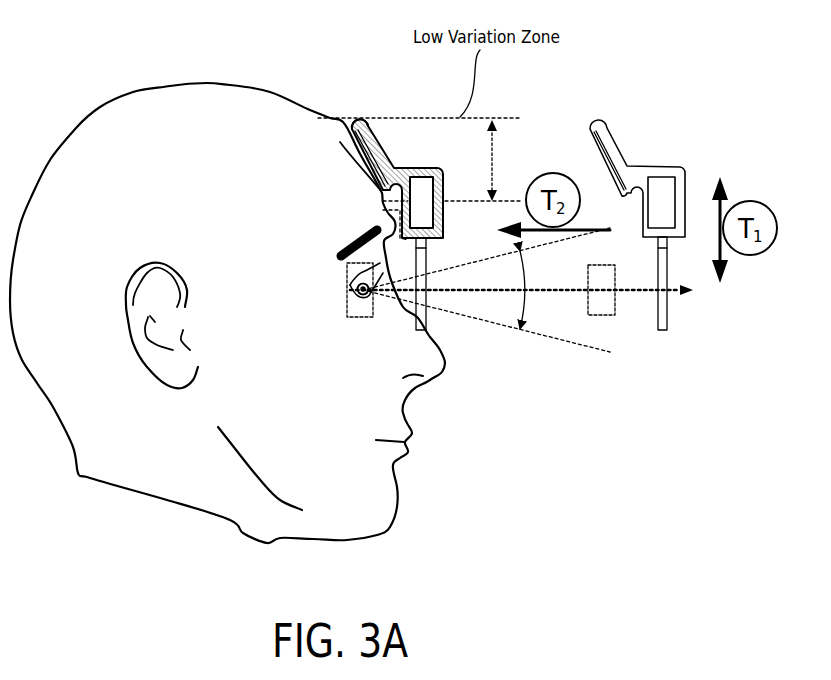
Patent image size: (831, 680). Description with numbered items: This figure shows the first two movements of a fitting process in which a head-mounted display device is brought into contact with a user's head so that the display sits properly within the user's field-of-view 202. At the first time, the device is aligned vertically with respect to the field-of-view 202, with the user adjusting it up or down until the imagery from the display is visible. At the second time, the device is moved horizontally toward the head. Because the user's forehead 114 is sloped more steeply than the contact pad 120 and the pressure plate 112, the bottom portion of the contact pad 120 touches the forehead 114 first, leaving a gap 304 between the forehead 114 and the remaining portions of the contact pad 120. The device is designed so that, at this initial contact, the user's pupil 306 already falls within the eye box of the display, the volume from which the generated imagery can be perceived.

The pressure plate 112 is at (368, 127).
The forehead 114 is at (340, 142).
The contact pad 120 is at (345, 124).
The field-of-view 202 is at (530, 273).
The gap 304 is at (322, 108).
The pupil 306 is at (352, 288).